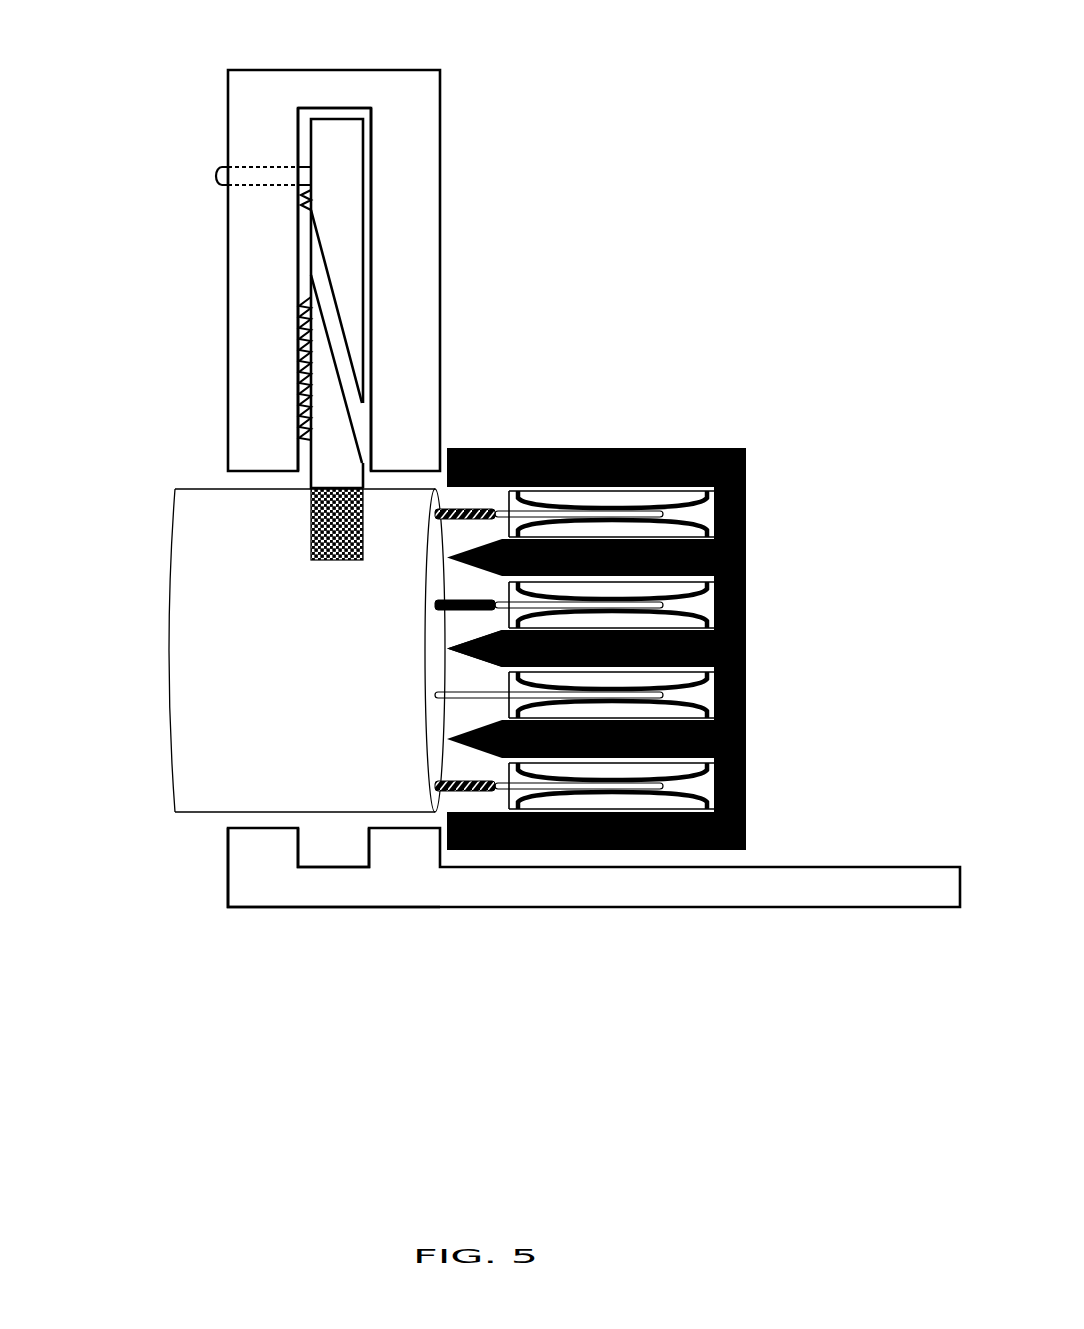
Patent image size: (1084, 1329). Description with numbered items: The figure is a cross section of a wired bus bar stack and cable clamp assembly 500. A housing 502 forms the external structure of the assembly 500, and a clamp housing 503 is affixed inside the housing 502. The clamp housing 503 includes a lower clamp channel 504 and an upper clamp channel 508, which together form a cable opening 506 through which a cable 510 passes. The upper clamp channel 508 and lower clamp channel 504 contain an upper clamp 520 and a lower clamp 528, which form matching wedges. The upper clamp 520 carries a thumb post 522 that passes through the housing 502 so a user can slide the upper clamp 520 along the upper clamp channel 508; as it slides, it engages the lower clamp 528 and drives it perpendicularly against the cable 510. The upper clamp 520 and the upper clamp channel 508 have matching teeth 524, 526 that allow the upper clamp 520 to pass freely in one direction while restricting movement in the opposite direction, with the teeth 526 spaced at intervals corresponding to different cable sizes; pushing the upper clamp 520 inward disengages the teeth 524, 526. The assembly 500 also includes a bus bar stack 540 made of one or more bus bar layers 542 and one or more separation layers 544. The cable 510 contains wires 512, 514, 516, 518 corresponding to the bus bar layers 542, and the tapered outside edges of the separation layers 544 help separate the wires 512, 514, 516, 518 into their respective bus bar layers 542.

The assembly 500 is at (597, 1000).
The housing 502 is at (878, 880).
The clamp housing 503 is at (410, 130).
The lower clamp channel 504 is at (327, 848).
The cable opening 506 is at (225, 820).
The upper clamp channel 508 is at (337, 112).
The cable 510 is at (207, 650).
The wire 512 is at (469, 792).
The wire 514 is at (454, 700).
The wire 516 is at (471, 598).
The wire 518 is at (451, 506).
The upper clamp 520 is at (311, 135).
The thumb post 522 is at (213, 177).
The teeth 524 is at (300, 208).
The teeth 526 is at (298, 377).
The lower clamp 528 is at (298, 460).
The bus bar stack 540 is at (723, 425).
The bus bar layer 542 is at (693, 508).
The separation layer 544 is at (637, 627).